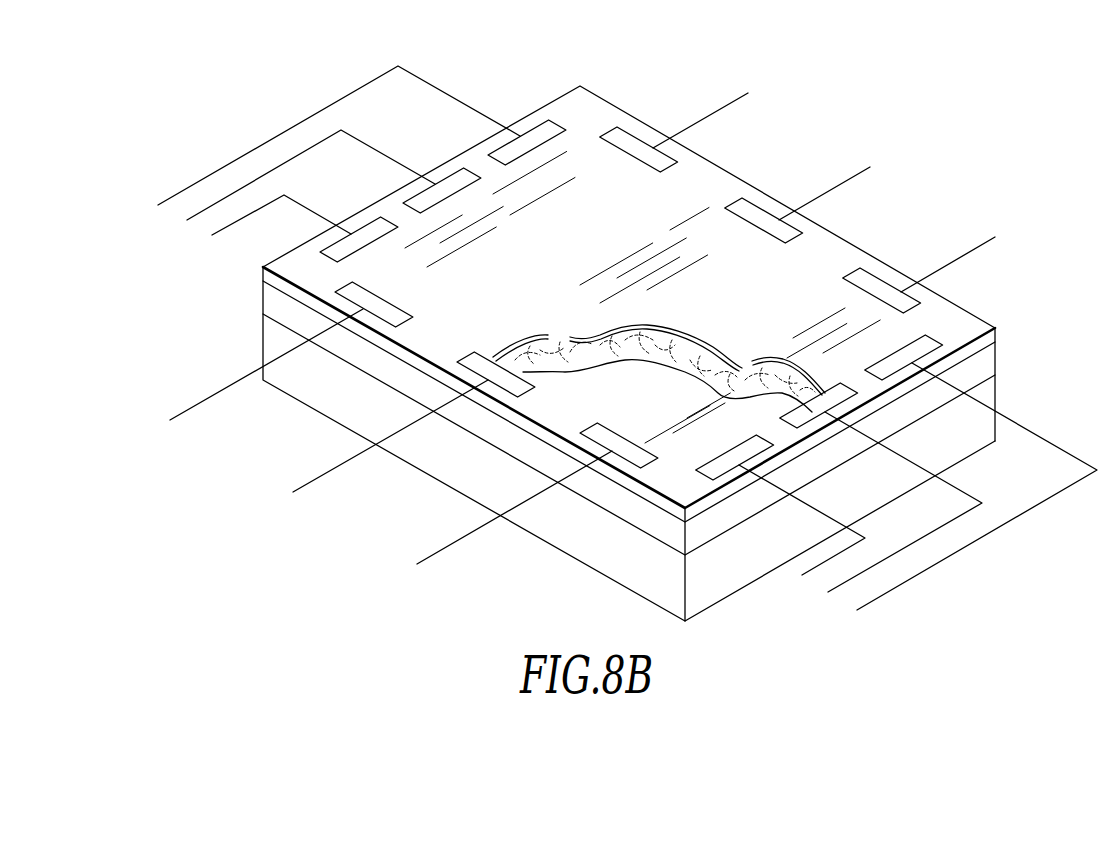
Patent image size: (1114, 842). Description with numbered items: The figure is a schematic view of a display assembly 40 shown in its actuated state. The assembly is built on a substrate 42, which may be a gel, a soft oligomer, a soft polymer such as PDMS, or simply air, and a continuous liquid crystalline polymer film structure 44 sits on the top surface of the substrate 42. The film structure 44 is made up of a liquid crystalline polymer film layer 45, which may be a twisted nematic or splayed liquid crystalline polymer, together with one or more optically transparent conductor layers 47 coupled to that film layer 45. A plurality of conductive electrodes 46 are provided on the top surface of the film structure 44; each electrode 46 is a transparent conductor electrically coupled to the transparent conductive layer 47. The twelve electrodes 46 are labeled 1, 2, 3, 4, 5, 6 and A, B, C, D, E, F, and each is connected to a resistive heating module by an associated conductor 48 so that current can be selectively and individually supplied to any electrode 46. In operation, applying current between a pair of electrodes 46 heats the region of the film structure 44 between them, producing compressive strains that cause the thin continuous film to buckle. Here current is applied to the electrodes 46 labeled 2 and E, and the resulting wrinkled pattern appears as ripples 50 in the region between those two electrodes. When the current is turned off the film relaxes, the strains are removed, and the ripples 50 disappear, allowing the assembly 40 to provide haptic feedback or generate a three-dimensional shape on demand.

The display assembly 40 is at (675, 322).
The substrate 42 is at (978, 433).
The liquid crystalline polymer film structure 44 is at (988, 355).
The liquid crystalline polymer film layer 45 is at (985, 373).
The conductive electrodes 46 is at (328, 258).
The optically transparent conductor layer 47 is at (978, 324).
The conductor 48 is at (619, 342).
The ripples 50 is at (667, 340).
The electrode label 1 is at (258, 374).
The electrode label 2 is at (382, 446).
The electrode label 3 is at (505, 518).
The electrode label 4 is at (705, 109).
The electrode label 5 is at (830, 184).
The electrode label 6 is at (953, 255).
The electrode label A is at (275, 226).
The electrode label B is at (303, 184).
The electrode label C is at (330, 145).
The electrode label D is at (969, 498).
The electrode label E is at (896, 514).
The electrode label F is at (802, 531).